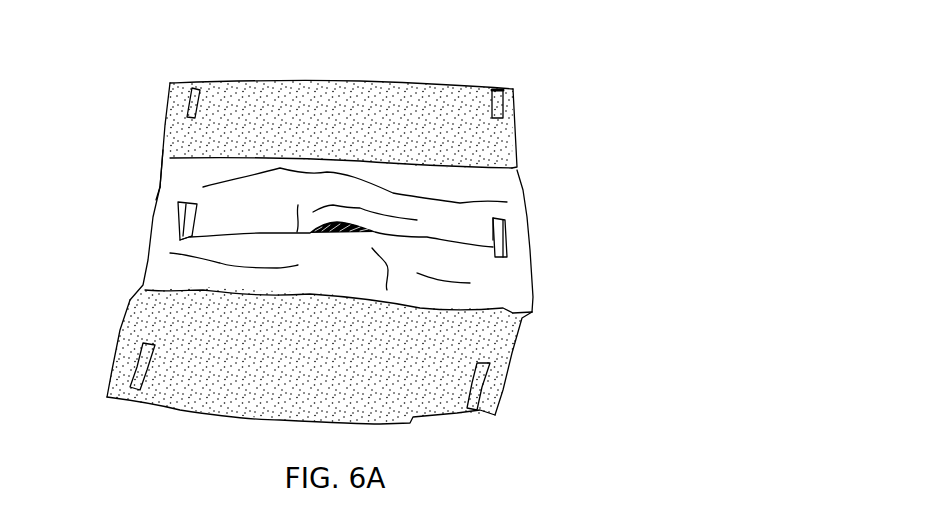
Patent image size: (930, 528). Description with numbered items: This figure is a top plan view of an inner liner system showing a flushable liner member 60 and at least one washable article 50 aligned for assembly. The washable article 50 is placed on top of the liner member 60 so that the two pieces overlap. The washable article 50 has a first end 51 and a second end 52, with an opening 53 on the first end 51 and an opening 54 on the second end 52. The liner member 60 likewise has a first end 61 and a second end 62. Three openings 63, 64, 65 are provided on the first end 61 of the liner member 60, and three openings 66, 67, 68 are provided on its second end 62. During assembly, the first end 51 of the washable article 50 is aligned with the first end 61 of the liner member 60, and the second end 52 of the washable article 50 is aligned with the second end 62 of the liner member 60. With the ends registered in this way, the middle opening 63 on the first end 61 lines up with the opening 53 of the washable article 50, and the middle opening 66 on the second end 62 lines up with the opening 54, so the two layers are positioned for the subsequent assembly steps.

The washable article 50 is at (318, 278).
The first end of washable article 51 is at (527, 213).
The second end of washable article 52 is at (160, 192).
The opening 53 is at (508, 238).
The opening 54 is at (177, 210).
The liner member 60 is at (428, 95).
The first end of liner member 61 is at (517, 140).
The second end of liner member 62 is at (160, 125).
The middle opening 63 is at (500, 250).
The opening 64 is at (500, 102).
The opening 65 is at (480, 387).
The middle opening 66 is at (178, 222).
The opening 67 is at (197, 86).
The opening 68 is at (140, 372).